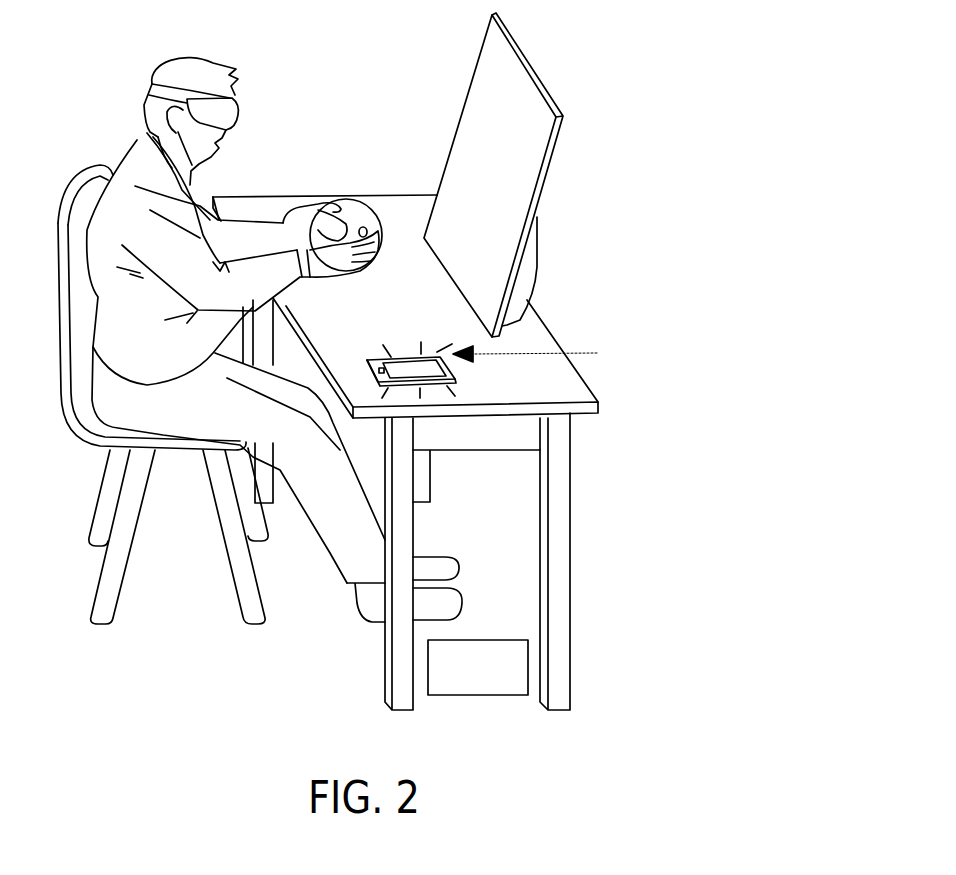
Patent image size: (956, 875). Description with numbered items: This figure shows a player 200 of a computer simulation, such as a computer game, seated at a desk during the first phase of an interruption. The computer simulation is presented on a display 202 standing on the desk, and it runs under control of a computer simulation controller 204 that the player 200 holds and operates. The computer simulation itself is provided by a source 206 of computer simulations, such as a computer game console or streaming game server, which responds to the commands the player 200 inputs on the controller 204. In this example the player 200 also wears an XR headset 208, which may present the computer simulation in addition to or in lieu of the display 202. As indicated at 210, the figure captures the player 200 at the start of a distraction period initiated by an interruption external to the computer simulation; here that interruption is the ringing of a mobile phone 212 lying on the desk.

The player 200 is at (128, 147).
The display 202 is at (535, 62).
The computer simulation controller 204 is at (343, 198).
The source of computer simulations 206 is at (503, 640).
The XR headset 208 is at (230, 112).
The start of distraction period 210 is at (708, 330).
The mobile phone 212 is at (447, 368).